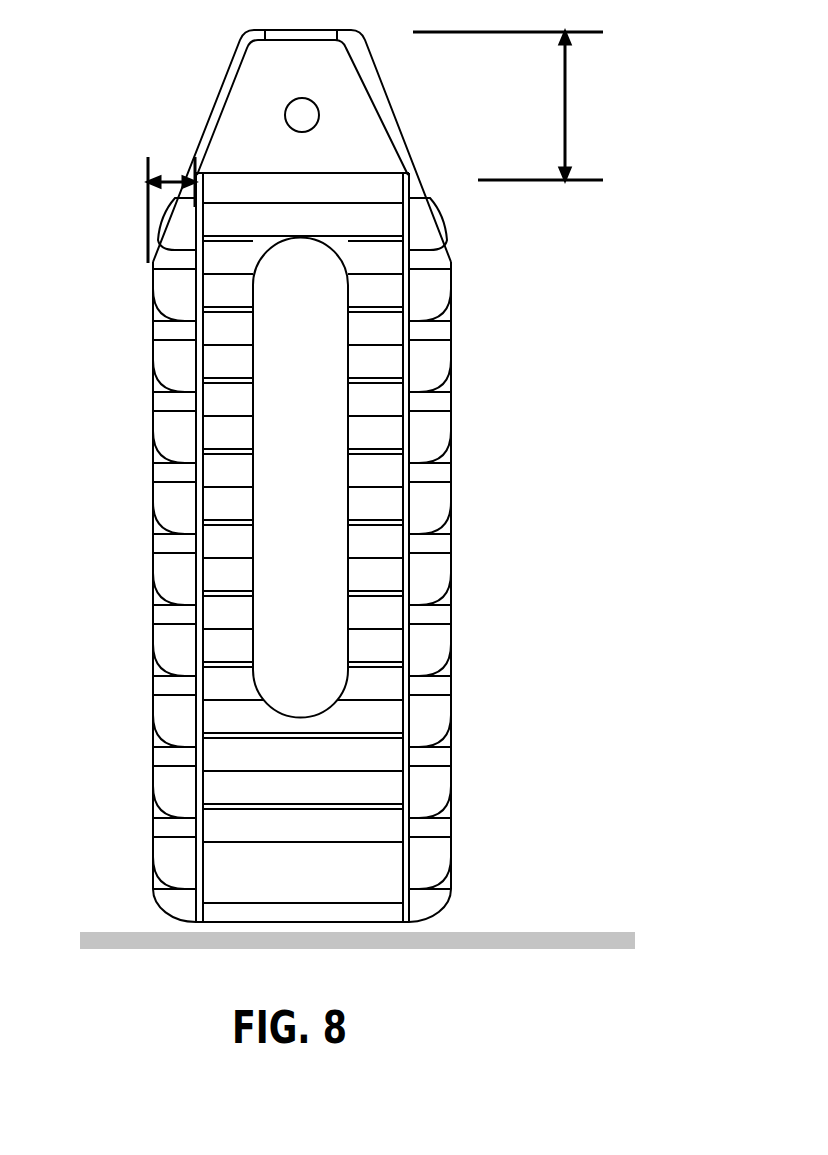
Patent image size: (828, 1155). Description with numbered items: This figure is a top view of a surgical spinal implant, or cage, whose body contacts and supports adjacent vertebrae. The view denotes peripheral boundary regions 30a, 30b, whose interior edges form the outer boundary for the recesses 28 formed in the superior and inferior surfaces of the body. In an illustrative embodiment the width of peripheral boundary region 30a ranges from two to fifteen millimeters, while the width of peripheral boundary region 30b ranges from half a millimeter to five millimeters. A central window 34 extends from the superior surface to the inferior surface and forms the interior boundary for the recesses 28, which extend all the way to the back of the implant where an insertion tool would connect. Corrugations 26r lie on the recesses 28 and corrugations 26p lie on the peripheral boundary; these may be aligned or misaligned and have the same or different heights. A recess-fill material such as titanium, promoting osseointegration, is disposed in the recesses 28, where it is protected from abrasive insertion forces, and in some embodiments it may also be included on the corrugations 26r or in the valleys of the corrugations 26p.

The corrugations on the peripheral boundary 26p is at (167, 465).
The corrugations on the recesses 26r is at (373, 382).
The recesses 28 is at (328, 757).
The window 34 is at (310, 484).
The peripheral boundary region 30a is at (562, 106).
The peripheral boundary region 30b is at (169, 178).